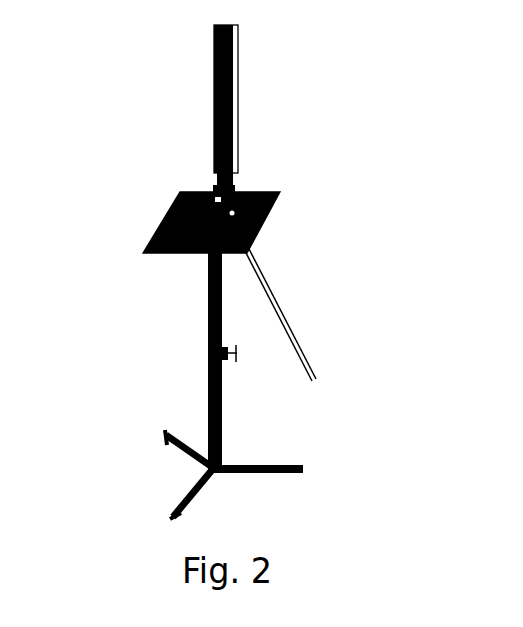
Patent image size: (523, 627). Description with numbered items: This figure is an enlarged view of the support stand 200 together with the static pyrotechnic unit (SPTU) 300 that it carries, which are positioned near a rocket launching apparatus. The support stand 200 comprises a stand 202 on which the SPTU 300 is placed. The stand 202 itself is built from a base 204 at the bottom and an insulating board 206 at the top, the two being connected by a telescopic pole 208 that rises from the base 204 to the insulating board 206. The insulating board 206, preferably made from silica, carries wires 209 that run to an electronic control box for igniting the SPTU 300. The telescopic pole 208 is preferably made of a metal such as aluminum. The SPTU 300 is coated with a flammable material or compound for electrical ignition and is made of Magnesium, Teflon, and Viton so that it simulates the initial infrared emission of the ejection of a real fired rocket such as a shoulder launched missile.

The support stand 200 is at (322, 120).
The static pyrotechnic unit (SPTU) 300 is at (212, 108).
The stand 202 is at (262, 228).
The insulating board 206 is at (248, 212).
The telescopic pole 208 is at (208, 392).
The wires 209 is at (303, 345).
The base 204 is at (205, 487).